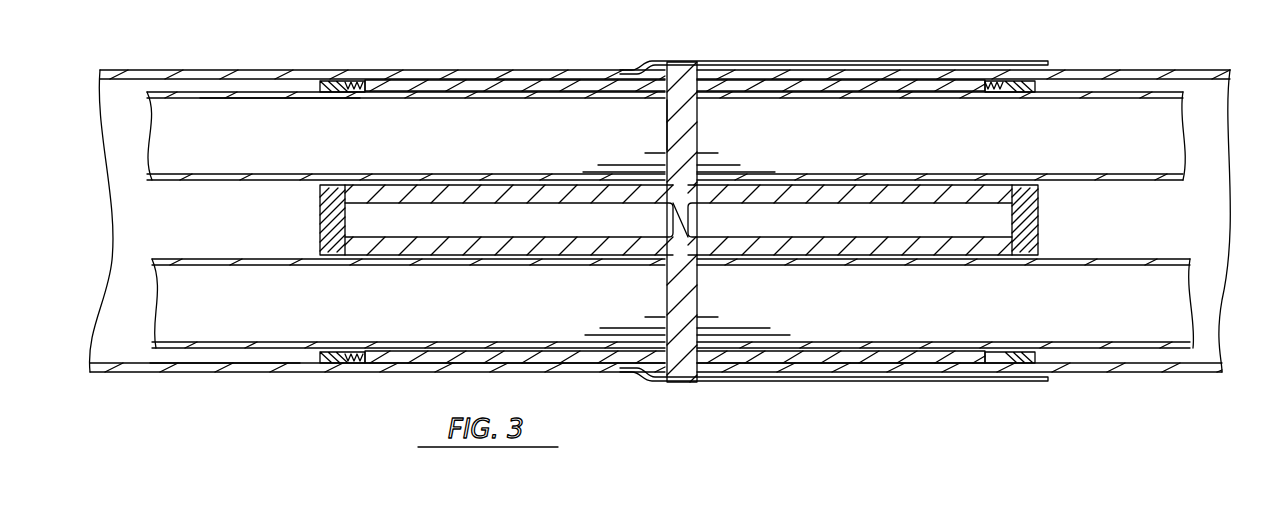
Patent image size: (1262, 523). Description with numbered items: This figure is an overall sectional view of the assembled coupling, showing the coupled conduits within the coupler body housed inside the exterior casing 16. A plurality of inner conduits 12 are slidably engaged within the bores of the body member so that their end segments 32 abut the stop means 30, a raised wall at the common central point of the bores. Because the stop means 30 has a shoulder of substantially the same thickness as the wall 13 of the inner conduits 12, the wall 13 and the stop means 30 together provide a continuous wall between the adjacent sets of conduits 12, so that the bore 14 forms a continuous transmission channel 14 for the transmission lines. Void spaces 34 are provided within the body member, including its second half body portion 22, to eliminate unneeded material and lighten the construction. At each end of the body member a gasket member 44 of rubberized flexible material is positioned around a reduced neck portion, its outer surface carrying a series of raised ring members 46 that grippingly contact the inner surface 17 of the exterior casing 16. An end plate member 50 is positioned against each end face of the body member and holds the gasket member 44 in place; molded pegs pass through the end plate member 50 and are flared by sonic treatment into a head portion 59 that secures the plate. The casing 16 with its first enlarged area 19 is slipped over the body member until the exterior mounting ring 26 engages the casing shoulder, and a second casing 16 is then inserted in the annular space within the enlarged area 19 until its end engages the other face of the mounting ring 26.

The inner conduit 12 is at (238, 91).
The wall of inner conduit 13 is at (276, 98).
The bore 14 is at (364, 142).
The exterior casing 16 is at (330, 70).
The inner surface of exterior housing 17 is at (226, 363).
The first enlarged area 19 is at (722, 62).
The second half body portion 22 is at (488, 82).
The mounting ring 26 is at (690, 381).
The stop means 30 is at (693, 142).
The end segment of conduit 32 is at (690, 106).
The void space 34 is at (497, 232).
The gasket member 44 is at (363, 80).
The raised ring member 46 is at (1003, 62).
The end plate member 50 is at (323, 365).
The head portion 59 is at (317, 193).